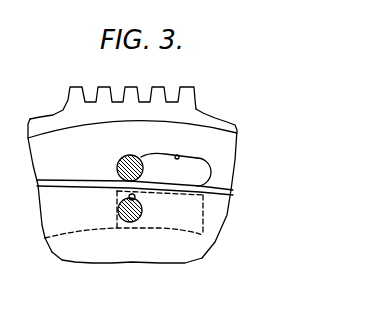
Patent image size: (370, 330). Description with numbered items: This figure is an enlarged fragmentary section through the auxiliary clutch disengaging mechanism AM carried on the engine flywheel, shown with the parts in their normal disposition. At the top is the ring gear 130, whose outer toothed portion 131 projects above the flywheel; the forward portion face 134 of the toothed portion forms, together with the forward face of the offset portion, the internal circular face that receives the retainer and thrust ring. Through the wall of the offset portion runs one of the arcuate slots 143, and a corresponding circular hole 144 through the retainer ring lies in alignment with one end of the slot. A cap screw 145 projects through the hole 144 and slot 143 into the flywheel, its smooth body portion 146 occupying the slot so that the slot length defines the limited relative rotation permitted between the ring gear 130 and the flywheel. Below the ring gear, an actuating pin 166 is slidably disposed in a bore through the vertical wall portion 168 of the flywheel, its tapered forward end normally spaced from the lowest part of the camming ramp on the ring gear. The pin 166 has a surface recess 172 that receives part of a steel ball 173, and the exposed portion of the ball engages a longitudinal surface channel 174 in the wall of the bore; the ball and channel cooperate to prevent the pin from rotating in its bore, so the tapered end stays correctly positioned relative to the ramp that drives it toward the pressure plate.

The ring gear 130 is at (56, 125).
The outer toothed portion 131 is at (71, 99).
The forward portion face 134 is at (229, 132).
The auxiliary clutch disengaging mechanism AM is at (237, 162).
The arcuate slots 143 is at (177, 155).
The circular holes 144 is at (123, 154).
The cap screws 145 is at (118, 165).
The smooth body portion 146 is at (150, 146).
The actuating pins 166 is at (118, 214).
The vertical wall portion 168 is at (101, 254).
The surface recess 172 is at (140, 204).
The steel ball 173 is at (136, 196).
The longitudinal surface channel 174 is at (126, 195).